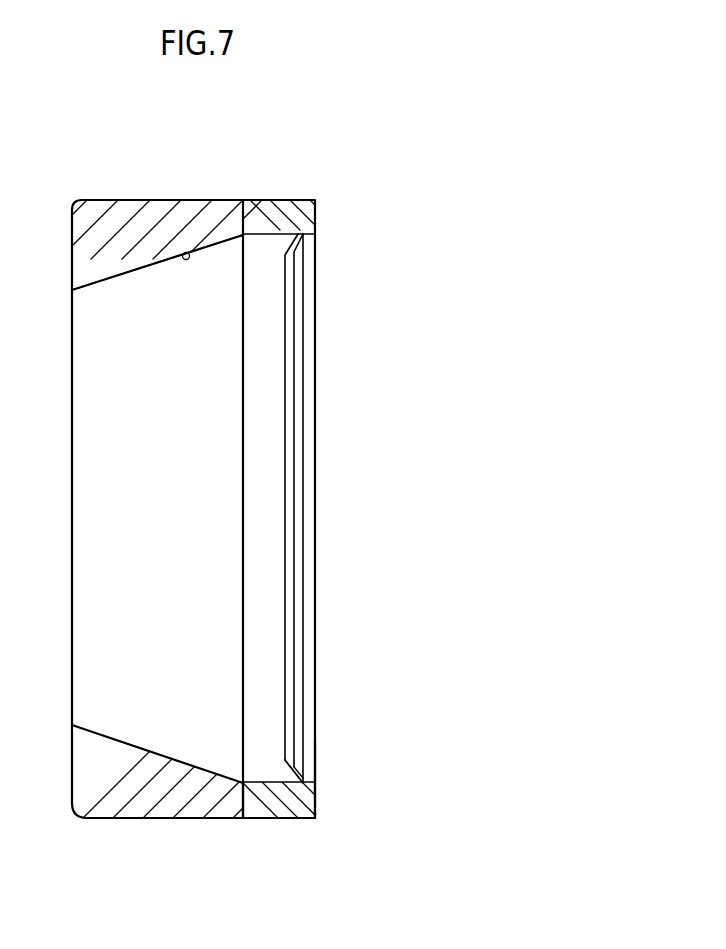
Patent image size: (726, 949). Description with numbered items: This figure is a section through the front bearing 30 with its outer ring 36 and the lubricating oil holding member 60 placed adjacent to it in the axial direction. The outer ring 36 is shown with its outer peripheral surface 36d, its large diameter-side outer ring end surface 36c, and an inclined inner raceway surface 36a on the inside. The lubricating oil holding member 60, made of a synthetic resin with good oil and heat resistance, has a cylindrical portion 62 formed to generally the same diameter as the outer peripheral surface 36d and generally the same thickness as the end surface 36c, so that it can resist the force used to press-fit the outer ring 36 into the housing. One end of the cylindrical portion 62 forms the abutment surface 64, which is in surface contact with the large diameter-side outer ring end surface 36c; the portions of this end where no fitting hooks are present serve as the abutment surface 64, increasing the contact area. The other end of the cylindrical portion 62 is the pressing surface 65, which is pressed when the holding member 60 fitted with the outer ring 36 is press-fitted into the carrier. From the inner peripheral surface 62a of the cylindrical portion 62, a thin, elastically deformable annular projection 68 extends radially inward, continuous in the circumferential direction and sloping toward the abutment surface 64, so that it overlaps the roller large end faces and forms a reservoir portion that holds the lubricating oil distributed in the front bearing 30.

The front bearing 30 is at (327, 217).
The outer ring 36 is at (70, 223).
The inclined surface 36a is at (180, 253).
The large diameter-side outer ring end surface 36c is at (250, 211).
The outer peripheral surface 36d is at (127, 200).
The lubricating oil holding member 60 is at (312, 830).
The cylindrical portion 62 is at (270, 805).
The inner peripheral surface 62a is at (273, 782).
The abutment surface 64 is at (241, 796).
The pressing surface 65 is at (317, 803).
The projection 68 is at (294, 764).